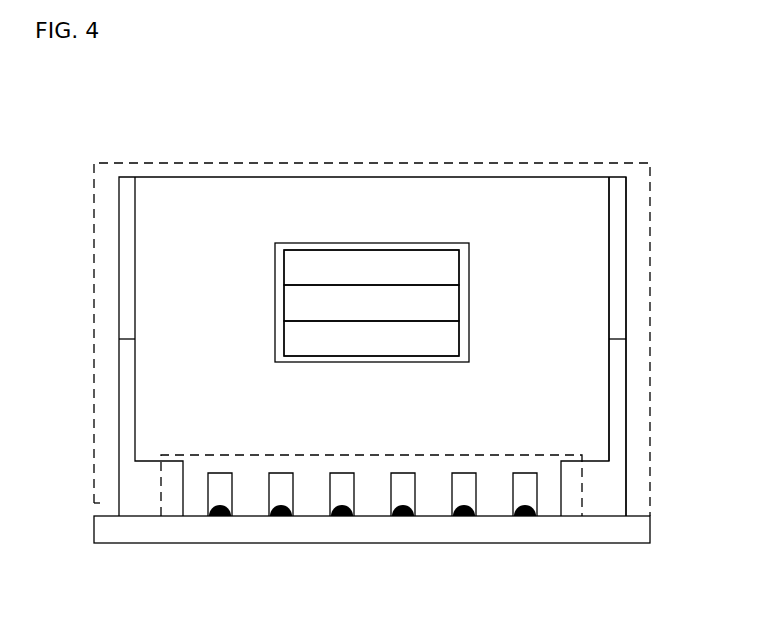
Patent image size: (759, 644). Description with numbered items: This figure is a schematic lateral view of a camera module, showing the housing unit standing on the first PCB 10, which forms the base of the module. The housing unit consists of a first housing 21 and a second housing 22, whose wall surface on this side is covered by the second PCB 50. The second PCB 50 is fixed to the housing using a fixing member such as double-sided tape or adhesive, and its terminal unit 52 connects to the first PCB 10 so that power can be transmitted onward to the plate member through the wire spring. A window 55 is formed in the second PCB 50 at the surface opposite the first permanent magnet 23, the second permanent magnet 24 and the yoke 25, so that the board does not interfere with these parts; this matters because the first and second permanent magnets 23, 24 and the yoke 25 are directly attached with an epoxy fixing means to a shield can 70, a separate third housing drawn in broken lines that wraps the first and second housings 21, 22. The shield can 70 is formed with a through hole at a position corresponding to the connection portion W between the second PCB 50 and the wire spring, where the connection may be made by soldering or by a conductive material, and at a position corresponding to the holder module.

The first PCB 10 is at (119, 535).
The shield can 70 is at (605, 163).
The second PCB 50 is at (218, 193).
The second housing 22 is at (619, 287).
The first housing 21 is at (617, 370).
The window 55 is at (388, 243).
The second permanent magnet 24 is at (295, 268).
The yoke 25 is at (295, 308).
The first permanent magnet 23 is at (295, 343).
The terminal unit 52 is at (527, 473).
The connection portion W is at (404, 520).